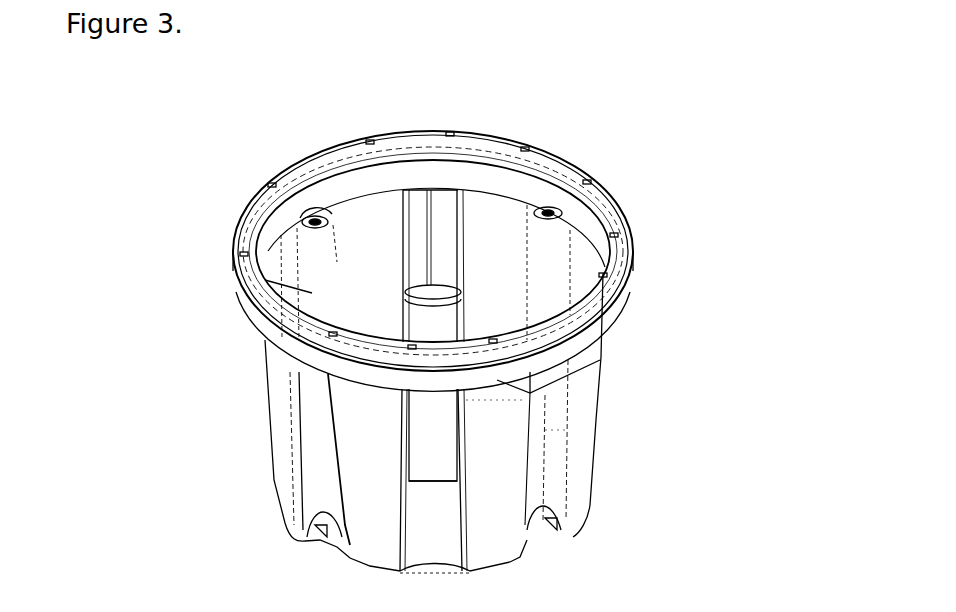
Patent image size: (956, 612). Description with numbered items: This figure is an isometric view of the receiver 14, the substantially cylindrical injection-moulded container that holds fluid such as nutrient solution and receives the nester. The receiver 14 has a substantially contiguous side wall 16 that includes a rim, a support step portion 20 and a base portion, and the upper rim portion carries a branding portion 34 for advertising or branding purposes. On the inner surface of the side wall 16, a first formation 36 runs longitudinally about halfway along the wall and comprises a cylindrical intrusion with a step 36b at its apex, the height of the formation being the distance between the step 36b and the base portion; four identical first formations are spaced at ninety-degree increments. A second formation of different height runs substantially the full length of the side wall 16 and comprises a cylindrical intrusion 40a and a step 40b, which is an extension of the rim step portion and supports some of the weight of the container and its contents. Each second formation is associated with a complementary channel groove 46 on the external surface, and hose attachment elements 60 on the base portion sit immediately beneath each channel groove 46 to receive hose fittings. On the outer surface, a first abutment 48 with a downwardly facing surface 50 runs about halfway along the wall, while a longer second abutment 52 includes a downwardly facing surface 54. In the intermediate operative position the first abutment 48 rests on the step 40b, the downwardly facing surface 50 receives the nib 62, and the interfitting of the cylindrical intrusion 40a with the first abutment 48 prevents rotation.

The receiver 14 is at (710, 68).
The side wall 16 is at (600, 418).
The support step portion 20 is at (528, 202).
The branding portion 34 is at (615, 288).
The first formation 36 is at (423, 322).
The step 36b is at (430, 282).
The cylindrical intrusion 40a is at (312, 293).
The step 40b is at (303, 222).
The channel groove 46 is at (550, 472).
The first abutment 48 is at (437, 420).
The downwardly facing surface 50 is at (433, 488).
The second abutment 52 is at (497, 455).
The downwardly facing surface 54 is at (372, 574).
The hose attachment element 60 is at (302, 535).
The nib 62 is at (325, 214).